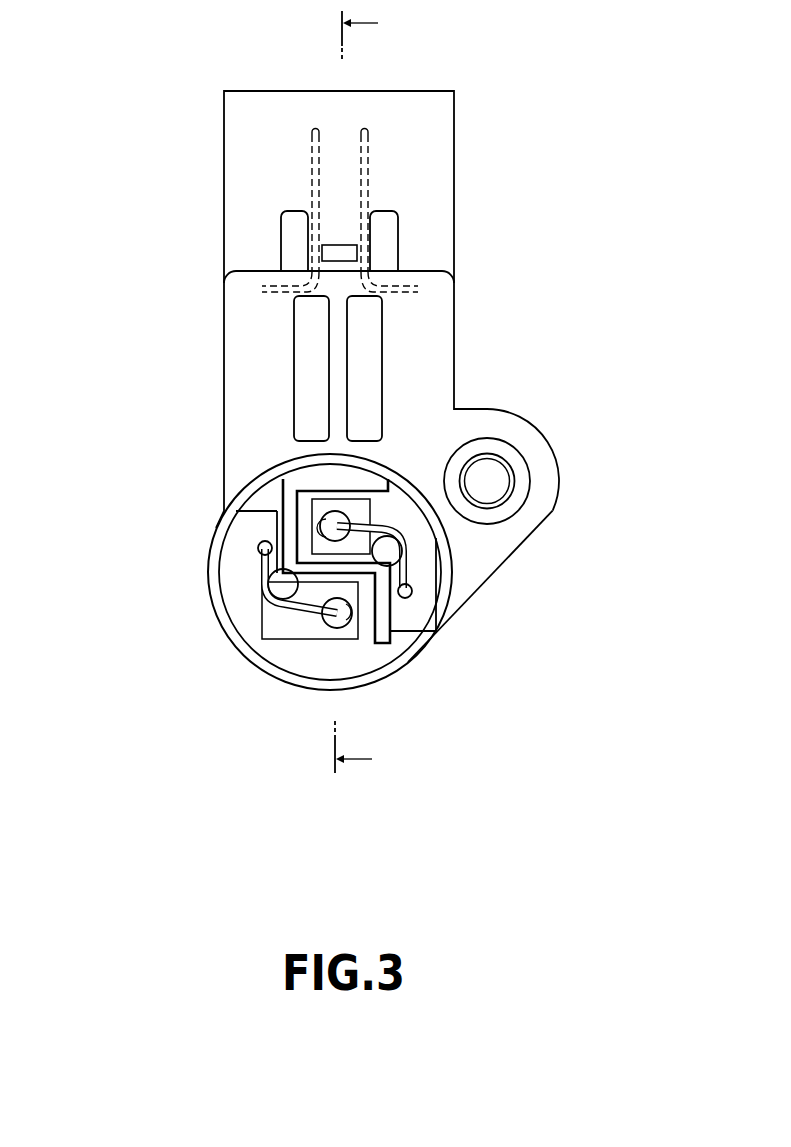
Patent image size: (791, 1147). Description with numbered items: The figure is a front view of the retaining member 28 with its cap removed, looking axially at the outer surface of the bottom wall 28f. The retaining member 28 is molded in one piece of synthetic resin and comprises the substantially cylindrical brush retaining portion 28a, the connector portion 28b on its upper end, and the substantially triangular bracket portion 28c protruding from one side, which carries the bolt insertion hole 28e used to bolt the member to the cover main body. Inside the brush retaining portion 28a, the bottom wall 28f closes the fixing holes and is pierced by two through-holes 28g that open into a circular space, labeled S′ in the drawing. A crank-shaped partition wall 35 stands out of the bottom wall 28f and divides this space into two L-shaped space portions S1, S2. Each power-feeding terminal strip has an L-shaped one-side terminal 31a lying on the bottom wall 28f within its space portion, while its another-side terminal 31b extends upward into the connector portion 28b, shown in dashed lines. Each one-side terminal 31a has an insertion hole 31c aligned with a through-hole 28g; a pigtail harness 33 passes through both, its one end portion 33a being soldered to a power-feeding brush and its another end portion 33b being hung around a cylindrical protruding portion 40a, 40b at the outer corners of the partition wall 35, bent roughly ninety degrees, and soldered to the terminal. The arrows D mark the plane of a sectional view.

The retaining member 28 is at (188, 317).
The brush retaining portion 28a is at (441, 637).
The connector portion 28b is at (447, 230).
The bracket portion 28c is at (546, 515).
The bolt insertion hole 28e is at (490, 483).
The bottom wall 28f is at (332, 665).
The through-hole 28g is at (334, 569).
The one-side terminal 31a is at (428, 563).
The another-side terminal 31b is at (421, 152).
The insertion hole 31c is at (331, 523).
The pigtail harness 33 is at (380, 532).
The one end portion of pigtail harness 33a is at (329, 518).
The another end portion of pigtail harness 33b is at (259, 566).
The partition wall 35 is at (420, 650).
The protruding portion 40a is at (411, 553).
The protruding portion 40b is at (262, 622).
The space portion S1 is at (363, 513).
The space portion S2 is at (280, 589).
The boundary line S' is at (414, 673).
The section line D is at (365, 392).